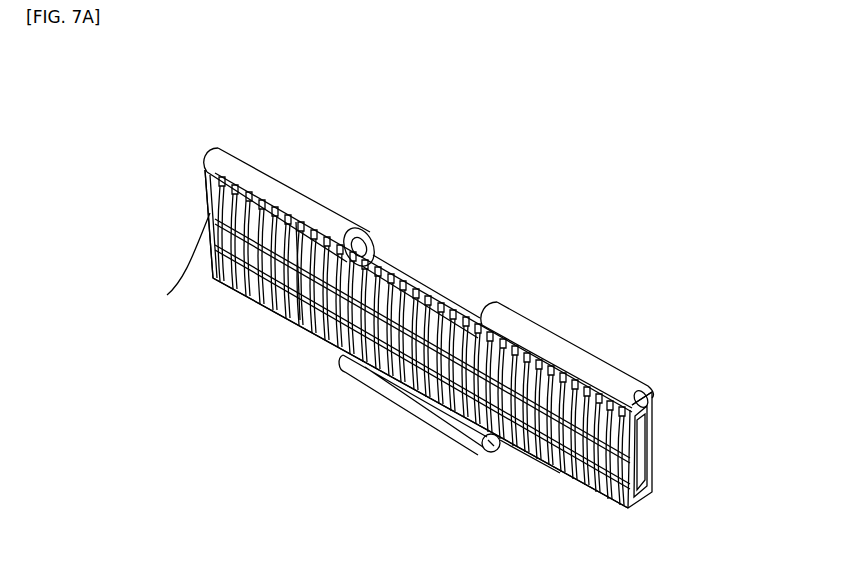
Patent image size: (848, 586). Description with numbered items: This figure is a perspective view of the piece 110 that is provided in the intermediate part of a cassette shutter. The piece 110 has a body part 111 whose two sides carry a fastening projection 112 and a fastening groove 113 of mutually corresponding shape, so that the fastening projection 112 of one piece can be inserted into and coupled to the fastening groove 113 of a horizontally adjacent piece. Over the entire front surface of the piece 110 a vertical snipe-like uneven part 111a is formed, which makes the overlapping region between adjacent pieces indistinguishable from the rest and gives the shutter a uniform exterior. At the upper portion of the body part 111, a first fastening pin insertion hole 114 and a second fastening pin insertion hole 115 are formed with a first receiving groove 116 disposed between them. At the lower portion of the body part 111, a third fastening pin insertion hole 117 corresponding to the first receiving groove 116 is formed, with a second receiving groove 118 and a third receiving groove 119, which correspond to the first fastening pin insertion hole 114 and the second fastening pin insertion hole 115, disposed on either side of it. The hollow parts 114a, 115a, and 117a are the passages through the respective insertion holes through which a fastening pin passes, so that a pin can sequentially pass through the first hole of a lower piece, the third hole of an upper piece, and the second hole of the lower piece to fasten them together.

The piece 110 is at (212, 86).
The body part 111 is at (262, 312).
The uneven part 111a is at (228, 272).
The fastening projection 112 is at (210, 213).
The fastening groove 113 is at (652, 442).
The first fastening pin insertion hole 114 is at (578, 340).
The hollow part 114a is at (640, 403).
The second fastening pin insertion hole 115 is at (296, 197).
The hollow part 115a is at (360, 243).
The first receiving groove 116 is at (430, 276).
The third fastening pin insertion hole 117 is at (412, 408).
The hollow part 117a is at (502, 455).
The second receiving groove 118 is at (545, 472).
The third receiving groove 119 is at (299, 338).